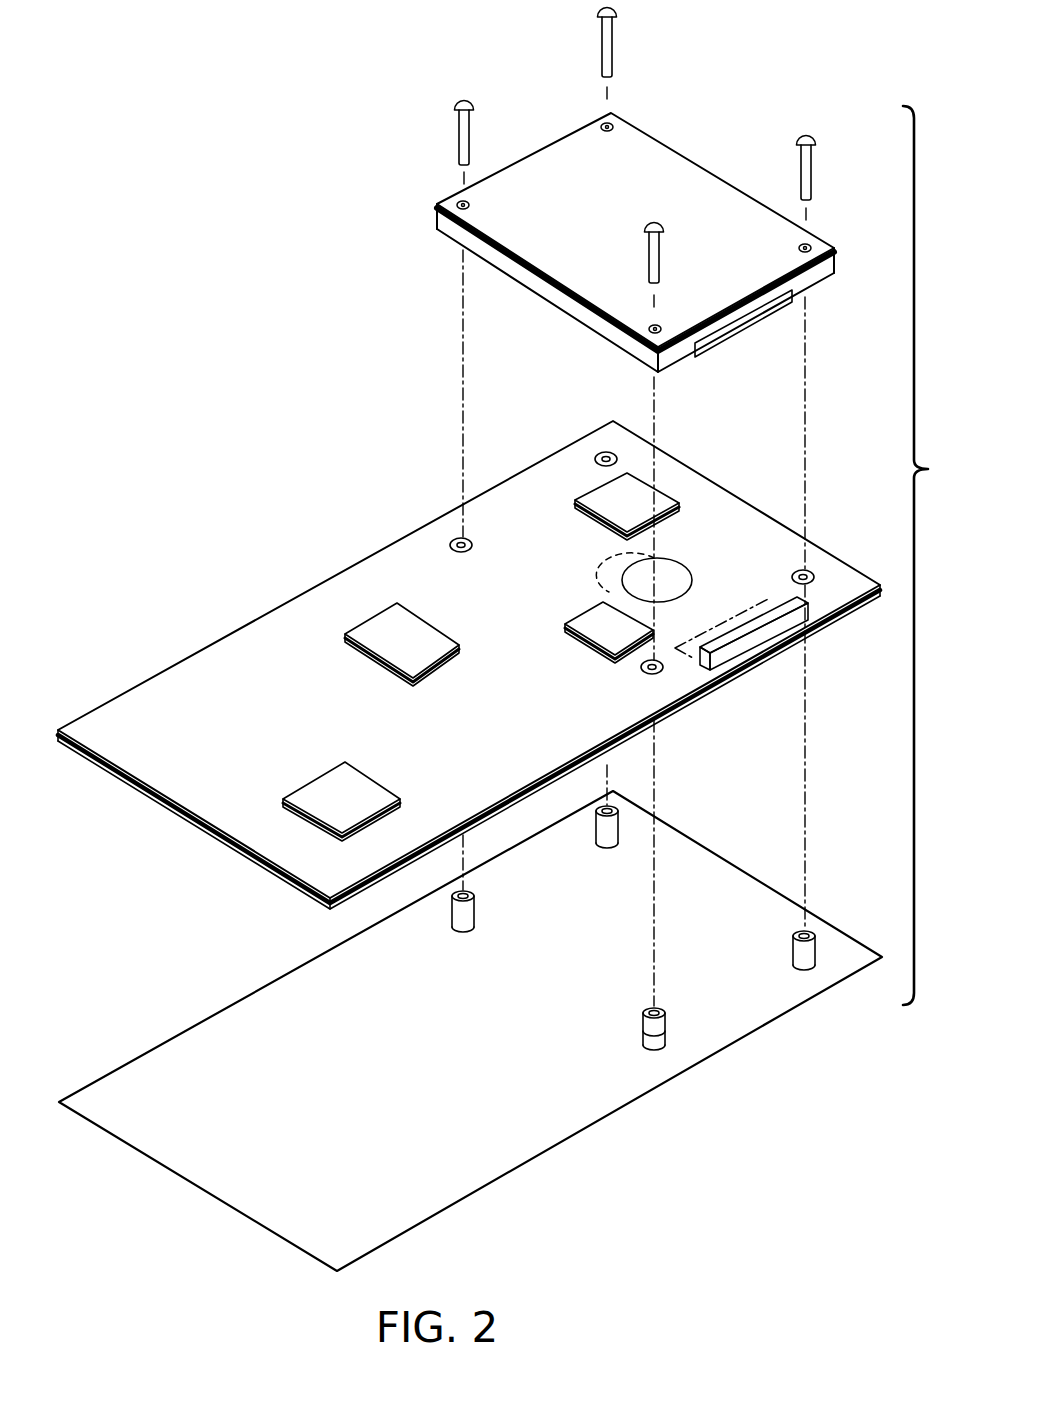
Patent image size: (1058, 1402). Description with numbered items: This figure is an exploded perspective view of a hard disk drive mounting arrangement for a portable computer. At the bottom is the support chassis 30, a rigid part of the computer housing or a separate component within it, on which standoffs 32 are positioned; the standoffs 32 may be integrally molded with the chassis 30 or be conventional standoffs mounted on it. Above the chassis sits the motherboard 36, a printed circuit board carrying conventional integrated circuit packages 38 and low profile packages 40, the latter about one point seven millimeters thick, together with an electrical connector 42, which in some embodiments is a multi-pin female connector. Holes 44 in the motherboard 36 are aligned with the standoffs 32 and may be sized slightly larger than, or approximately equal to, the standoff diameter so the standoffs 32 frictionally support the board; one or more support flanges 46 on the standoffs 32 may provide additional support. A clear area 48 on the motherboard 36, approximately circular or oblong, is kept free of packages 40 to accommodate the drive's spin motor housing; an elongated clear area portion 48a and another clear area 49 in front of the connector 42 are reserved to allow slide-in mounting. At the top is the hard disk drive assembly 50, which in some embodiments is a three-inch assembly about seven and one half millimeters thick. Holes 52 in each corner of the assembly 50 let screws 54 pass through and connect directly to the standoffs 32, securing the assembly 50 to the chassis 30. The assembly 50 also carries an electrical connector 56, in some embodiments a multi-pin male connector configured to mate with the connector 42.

The support chassis 30 is at (290, 1224).
The standoffs 32 is at (460, 919).
The motherboard 36 is at (169, 779).
The integrated circuit packages 38 is at (389, 628).
The low profile packages 40 is at (658, 500).
The electrical connector 42 is at (763, 621).
The holes 44 is at (603, 455).
The support flanges 46 is at (666, 1027).
The clear area 48 is at (663, 568).
The elongated clear area portion 48a is at (620, 553).
The clear area 49 is at (765, 602).
The hard disk drive assembly 50 is at (670, 160).
The holes 52 is at (611, 122).
The screws 54 is at (607, 52).
The electrical connector 56 is at (715, 339).